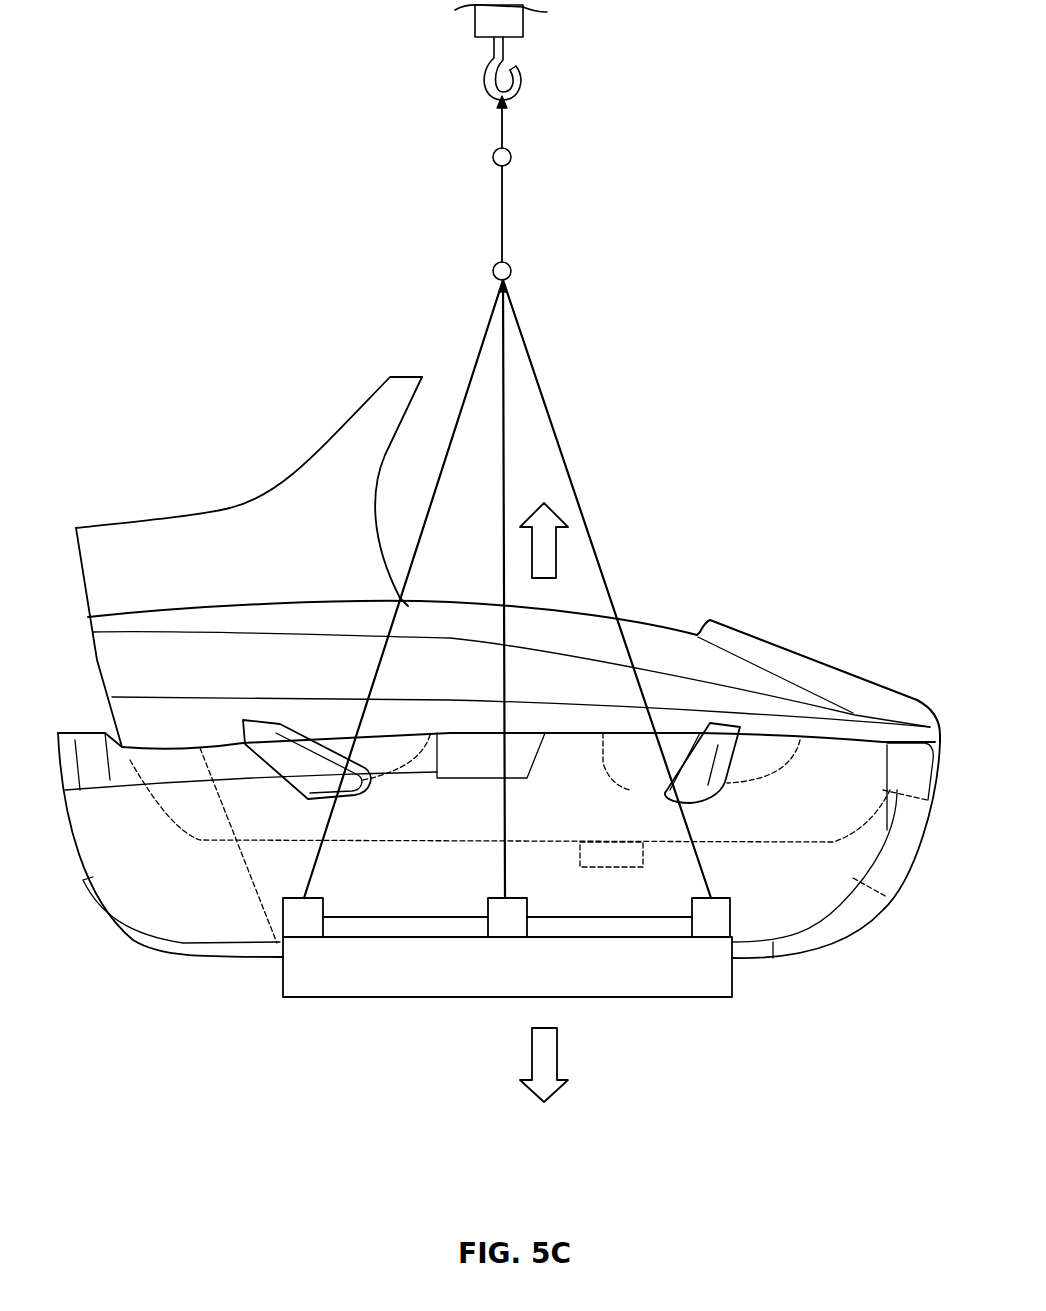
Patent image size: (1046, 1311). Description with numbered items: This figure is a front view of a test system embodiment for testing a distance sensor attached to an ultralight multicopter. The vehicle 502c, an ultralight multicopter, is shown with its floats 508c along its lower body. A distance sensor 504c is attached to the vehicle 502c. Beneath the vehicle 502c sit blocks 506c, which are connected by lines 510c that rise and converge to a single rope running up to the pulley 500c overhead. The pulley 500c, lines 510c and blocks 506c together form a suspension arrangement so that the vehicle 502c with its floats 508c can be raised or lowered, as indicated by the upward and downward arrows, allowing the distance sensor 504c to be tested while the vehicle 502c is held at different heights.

The pulley 500c is at (523, 28).
The lines 510c is at (553, 413).
The vehicle 502c is at (768, 640).
The floats 508c is at (183, 953).
The blocks 506c is at (397, 999).
The distance sensor 504c is at (612, 867).